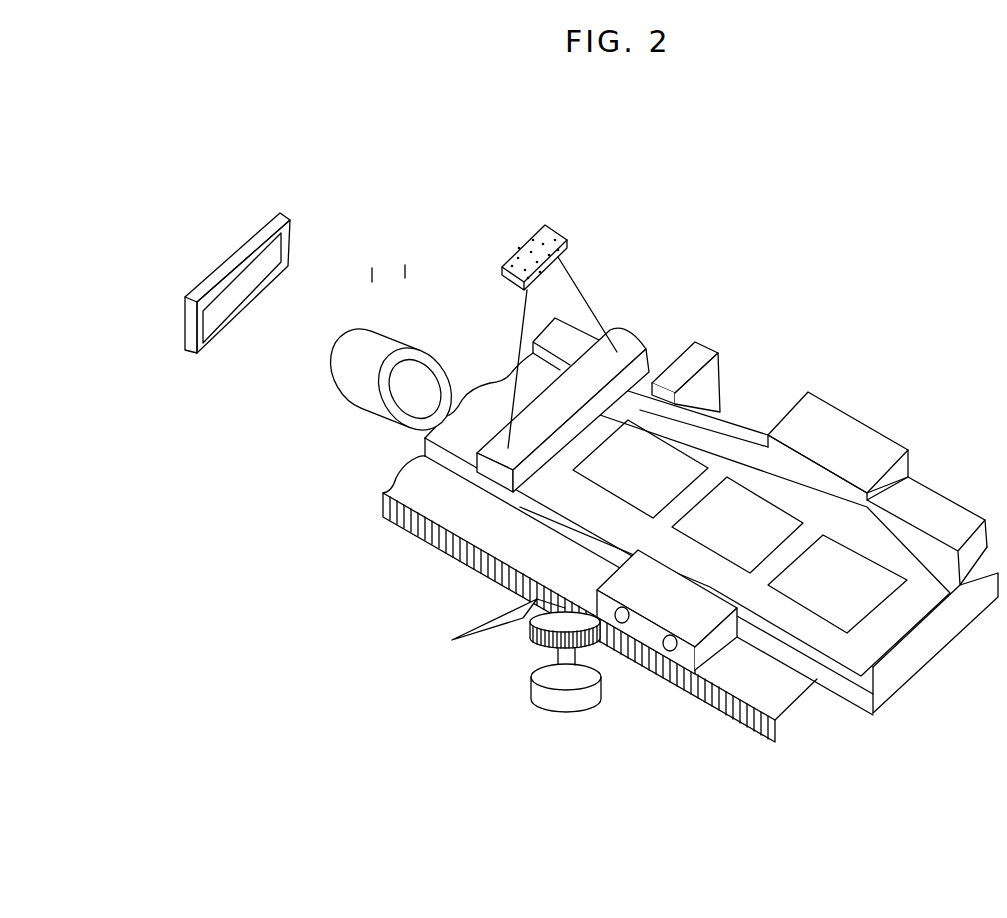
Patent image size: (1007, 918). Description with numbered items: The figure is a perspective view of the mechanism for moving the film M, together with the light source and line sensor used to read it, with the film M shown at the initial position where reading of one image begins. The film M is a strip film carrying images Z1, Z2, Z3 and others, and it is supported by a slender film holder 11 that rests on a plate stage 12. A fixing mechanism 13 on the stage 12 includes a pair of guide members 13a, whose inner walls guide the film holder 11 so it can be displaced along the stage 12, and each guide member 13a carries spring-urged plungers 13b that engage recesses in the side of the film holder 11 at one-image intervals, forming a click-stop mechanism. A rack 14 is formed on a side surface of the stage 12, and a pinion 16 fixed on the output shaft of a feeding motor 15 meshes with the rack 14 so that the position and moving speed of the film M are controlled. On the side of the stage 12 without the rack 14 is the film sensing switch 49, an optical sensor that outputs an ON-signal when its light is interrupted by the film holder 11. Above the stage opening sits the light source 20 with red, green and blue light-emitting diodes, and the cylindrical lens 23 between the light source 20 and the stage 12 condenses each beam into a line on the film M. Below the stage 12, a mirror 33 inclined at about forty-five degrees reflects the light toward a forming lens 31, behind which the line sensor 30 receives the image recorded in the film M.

The film holder 11 is at (874, 678).
The plate stage 12 is at (760, 745).
The fixing mechanism 13 is at (667, 656).
The guide member 13a is at (842, 438).
The plunger 13b is at (622, 624).
The rack 14 is at (402, 522).
The feeding motor 15 is at (547, 702).
The pinion 16 is at (532, 638).
The light source 20 is at (556, 233).
The cylindrical lens 23 is at (626, 344).
The line sensor 30 is at (233, 261).
The forming lens 31 is at (364, 384).
The mirror 33 is at (468, 625).
The film sensing switch 49 is at (697, 355).
The film M is at (760, 545).
The image Z1 is at (837, 584).
The image Z2 is at (737, 525).
The image Z3 is at (640, 469).